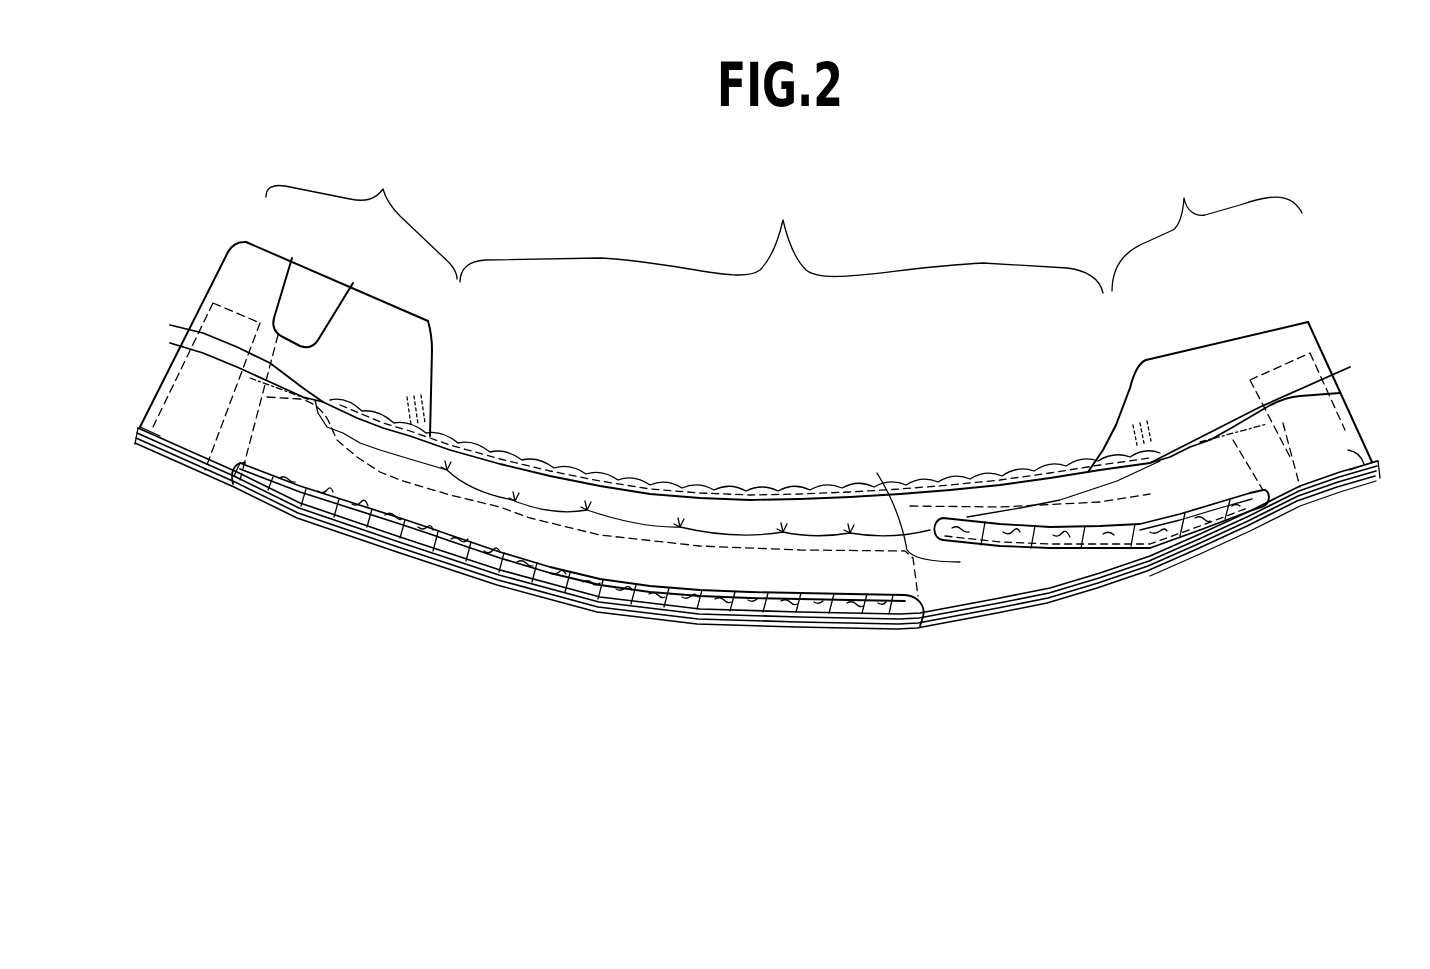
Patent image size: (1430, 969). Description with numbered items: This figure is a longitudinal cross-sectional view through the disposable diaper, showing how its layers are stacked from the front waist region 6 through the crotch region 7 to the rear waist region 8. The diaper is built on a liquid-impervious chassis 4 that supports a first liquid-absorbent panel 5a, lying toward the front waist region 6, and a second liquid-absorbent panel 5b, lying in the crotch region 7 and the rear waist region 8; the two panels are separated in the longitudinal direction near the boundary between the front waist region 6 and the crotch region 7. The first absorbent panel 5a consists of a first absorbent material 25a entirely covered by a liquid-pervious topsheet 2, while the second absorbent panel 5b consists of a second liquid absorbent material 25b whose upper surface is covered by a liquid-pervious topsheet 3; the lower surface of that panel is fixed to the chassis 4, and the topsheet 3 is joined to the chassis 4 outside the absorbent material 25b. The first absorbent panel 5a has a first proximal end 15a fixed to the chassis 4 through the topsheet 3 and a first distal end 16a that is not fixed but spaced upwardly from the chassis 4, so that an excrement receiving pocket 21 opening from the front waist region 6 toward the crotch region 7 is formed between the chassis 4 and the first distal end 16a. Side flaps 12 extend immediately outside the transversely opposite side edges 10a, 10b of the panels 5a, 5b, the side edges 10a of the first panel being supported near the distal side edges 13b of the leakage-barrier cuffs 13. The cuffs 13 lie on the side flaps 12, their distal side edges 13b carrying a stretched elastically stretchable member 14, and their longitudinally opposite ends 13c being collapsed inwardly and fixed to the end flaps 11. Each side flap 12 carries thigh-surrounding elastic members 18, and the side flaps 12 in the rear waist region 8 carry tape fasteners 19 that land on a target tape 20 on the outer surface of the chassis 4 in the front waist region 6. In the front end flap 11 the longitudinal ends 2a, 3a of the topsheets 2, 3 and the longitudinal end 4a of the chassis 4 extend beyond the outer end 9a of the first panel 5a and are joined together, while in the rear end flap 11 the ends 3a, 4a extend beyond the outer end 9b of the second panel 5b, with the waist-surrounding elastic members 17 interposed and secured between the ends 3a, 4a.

The liquid-pervious topsheet 2 is at (1103, 550).
The longitudinal end of topsheet 2a is at (1367, 441).
The liquid-pervious topsheet 3 is at (607, 570).
The longitudinal end of topsheet 3a is at (150, 420).
The liquid-impervious chassis 4 is at (900, 613).
The longitudinal end of chassis 4a is at (163, 447).
The first liquid-absorbent panel 5a is at (1033, 533).
The second liquid-absorbent panel 5b is at (410, 550).
The front waist region 6 is at (1198, 321).
The crotch region 7 is at (781, 239).
The rear waist region 8 is at (298, 297).
The outer end of first absorbent panel 9a is at (1267, 512).
The outer end of second absorbent panel 9b is at (233, 480).
The first transversely opposite side edges 10a is at (1070, 490).
The front seal 10b is at (597, 480).
The end flaps 11 is at (230, 437).
The side flaps 12 is at (1140, 440).
The leakage-barrier cuffs 13 is at (648, 505).
The distal side edge 13b is at (743, 507).
The longitudinally opposite ends 13c is at (180, 327).
The elastically stretchable member 14 is at (523, 460).
The first proximal end 15a is at (1197, 537).
The first distal end 16a is at (973, 523).
The waist-surrounding elastic members 17 is at (183, 383).
The thigh-surrounding elastic members 18 is at (427, 400).
The tape fasteners 19 is at (313, 280).
The target tape 20 is at (1163, 567).
The excrement receiving pocket 21 is at (908, 505).
The first absorbent material 25a is at (1000, 533).
The second liquid absorbent material 25b is at (520, 590).